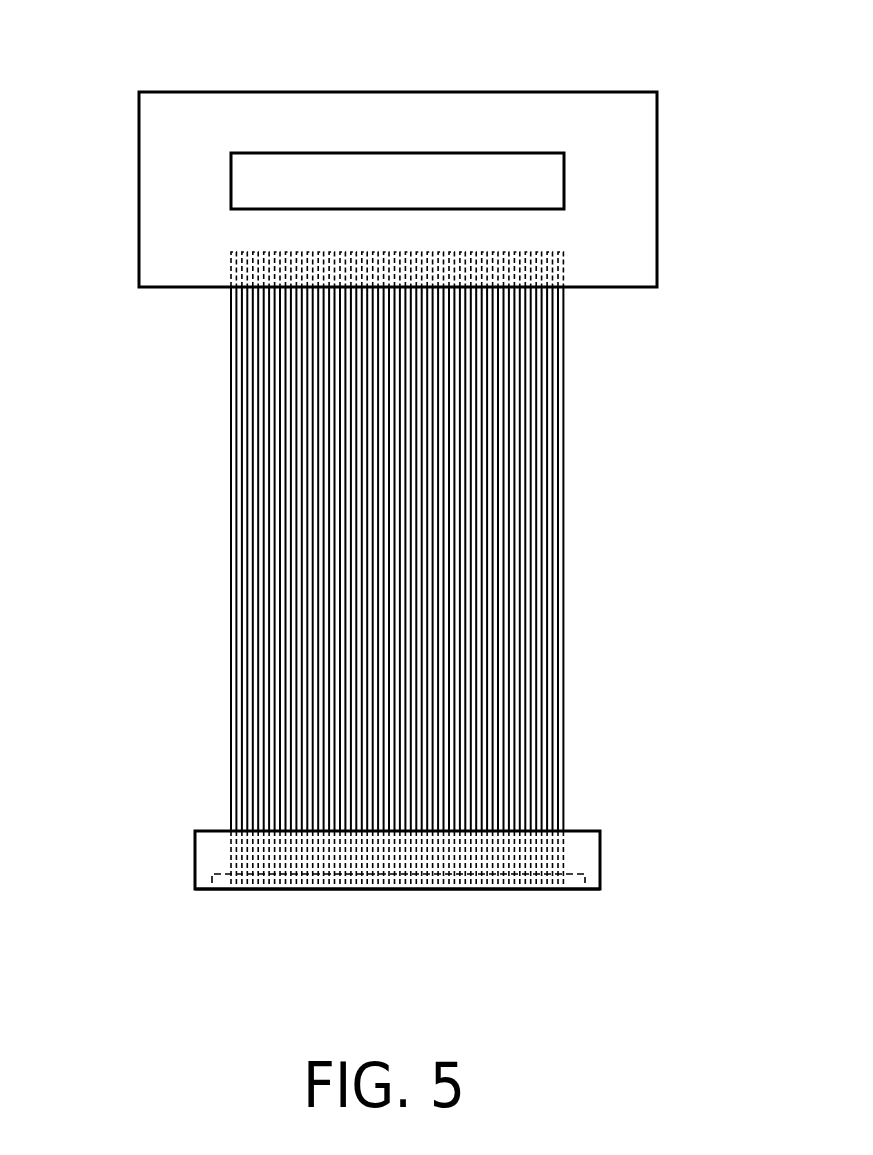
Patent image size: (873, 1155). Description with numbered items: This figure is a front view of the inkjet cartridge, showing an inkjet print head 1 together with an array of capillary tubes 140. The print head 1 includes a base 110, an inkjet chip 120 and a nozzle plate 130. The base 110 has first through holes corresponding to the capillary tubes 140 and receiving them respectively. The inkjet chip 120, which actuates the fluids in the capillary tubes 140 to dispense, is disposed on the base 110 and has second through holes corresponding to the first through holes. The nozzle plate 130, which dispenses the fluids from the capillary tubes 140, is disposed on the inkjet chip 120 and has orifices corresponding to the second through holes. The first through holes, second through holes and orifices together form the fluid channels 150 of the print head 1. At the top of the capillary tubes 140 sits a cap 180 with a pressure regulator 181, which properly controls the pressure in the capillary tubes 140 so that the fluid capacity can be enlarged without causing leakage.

The inkjet print head 1 is at (195, 851).
The base 110 is at (595, 831).
The inkjet chip 120 is at (600, 888).
The nozzle plate 130 is at (240, 888).
The capillary tubes 140 is at (540, 422).
The fluid channels 150 is at (212, 877).
The cap 180 is at (658, 193).
The pressure regulator 181 is at (406, 172).